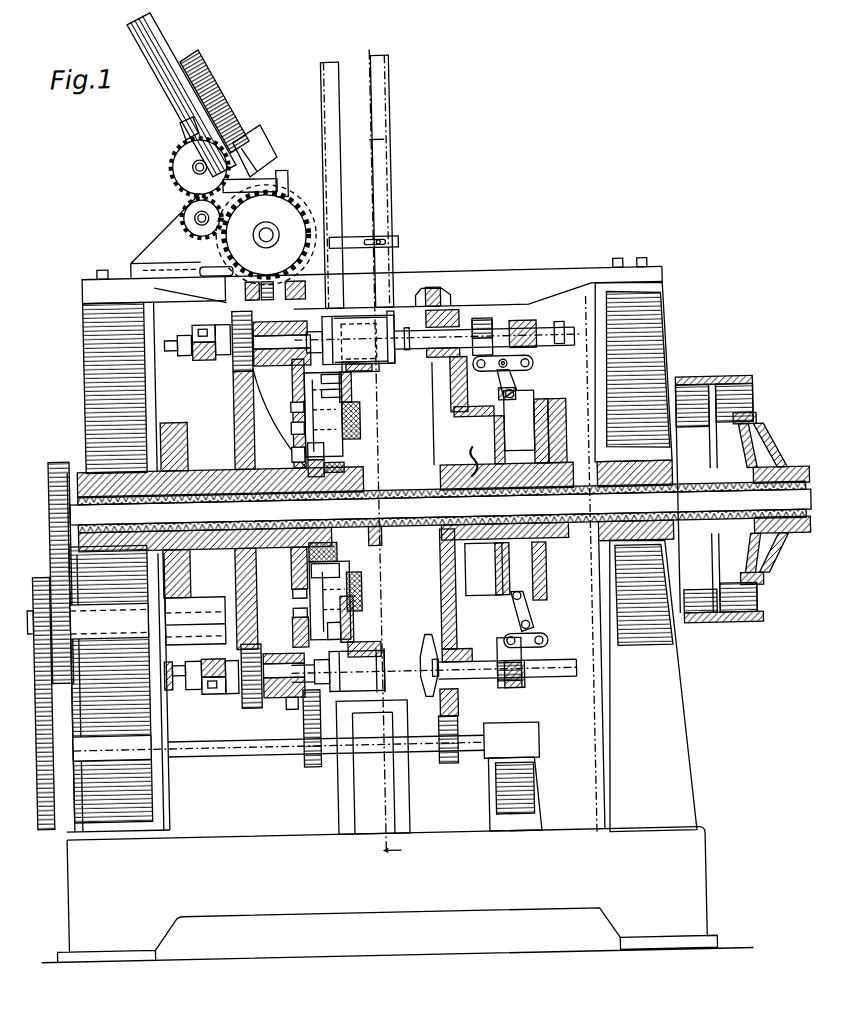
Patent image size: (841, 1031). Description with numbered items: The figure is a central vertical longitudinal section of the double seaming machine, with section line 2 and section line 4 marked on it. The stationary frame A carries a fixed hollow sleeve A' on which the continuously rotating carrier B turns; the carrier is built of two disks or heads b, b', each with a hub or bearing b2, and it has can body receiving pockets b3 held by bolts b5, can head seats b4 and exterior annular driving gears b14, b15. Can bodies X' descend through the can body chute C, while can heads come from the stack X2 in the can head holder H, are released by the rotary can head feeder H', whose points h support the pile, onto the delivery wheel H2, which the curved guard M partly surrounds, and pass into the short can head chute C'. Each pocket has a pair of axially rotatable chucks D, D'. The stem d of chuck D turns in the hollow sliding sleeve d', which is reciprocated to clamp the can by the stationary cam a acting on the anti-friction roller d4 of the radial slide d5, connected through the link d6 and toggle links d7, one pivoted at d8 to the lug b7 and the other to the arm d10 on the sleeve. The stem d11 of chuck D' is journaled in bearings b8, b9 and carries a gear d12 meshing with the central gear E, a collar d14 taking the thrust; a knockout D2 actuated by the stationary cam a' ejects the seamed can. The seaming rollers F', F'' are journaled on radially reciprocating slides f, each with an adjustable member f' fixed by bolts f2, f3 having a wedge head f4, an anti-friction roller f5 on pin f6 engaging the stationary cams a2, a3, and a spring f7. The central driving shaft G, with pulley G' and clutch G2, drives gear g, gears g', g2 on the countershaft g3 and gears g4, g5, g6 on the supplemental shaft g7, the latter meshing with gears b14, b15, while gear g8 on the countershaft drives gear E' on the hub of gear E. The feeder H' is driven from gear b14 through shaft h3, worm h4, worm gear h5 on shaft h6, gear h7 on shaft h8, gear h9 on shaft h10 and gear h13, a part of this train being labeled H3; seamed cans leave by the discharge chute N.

The stationary frame A is at (629, 560).
The stationary hollow sleeve A' is at (579, 564).
The central stationary cam a is at (556, 430).
The stationary cam a' is at (174, 692).
The central stationary cam a2 is at (296, 468).
The central stationary cam a3 is at (359, 470).
The rotating carrier B is at (349, 436).
The carrier disk b is at (269, 419).
The carrier disk b' is at (468, 509).
The hub b2 is at (289, 707).
The can body receiving pocket b3 is at (358, 370).
The can head seat b4 is at (362, 503).
The bolt b5 is at (367, 646).
The lug b7 is at (536, 328).
The bearing b8 is at (210, 357).
The radially yielding outer bearing b9 is at (258, 713).
The exterior annular driving gear b14 is at (322, 306).
The exterior annular driving gear b15 is at (445, 291).
The can body chute C is at (357, 175).
The can head chute C' is at (364, 255).
The can holder chuck D is at (440, 469).
The can holder chuck D' is at (338, 684).
The knockout D2 is at (179, 346).
The stem d is at (433, 516).
The hollow sliding sleeve d' is at (485, 519).
The anti-friction roller d4 is at (553, 423).
The radial slide d5 is at (538, 413).
The link d6 is at (525, 398).
The toggle links d7 is at (540, 371).
The pivot d8 is at (546, 649).
The arm d10 is at (485, 372).
The stem d11 is at (285, 499).
The gear d12 is at (230, 333).
The collar d14 is at (233, 357).
The central gear E is at (193, 504).
The gear E' is at (180, 408).
The seaming roller F' is at (344, 391).
The fork F'' is at (346, 590).
The seaming roller slide f is at (312, 522).
The adjustable member f' is at (285, 416).
The bolt f2 is at (295, 428).
The bolt f3 is at (295, 452).
The wedge shaped head f4 is at (365, 410).
The anti-friction roller f5 is at (345, 459).
The pin f6 is at (365, 436).
The spring f7 is at (364, 426).
The central driving shaft G is at (441, 507).
The driving pulley G' is at (718, 479).
The clutch G2 is at (769, 453).
The gear g is at (58, 557).
The gear g' is at (40, 688).
The gear g2 is at (69, 672).
The countershaft g3 is at (111, 684).
The gear g4 is at (46, 823).
The gear g5 is at (306, 766).
The gear g6 is at (445, 765).
The supplemental shaft g7 is at (231, 753).
The gear g8 is at (190, 596).
The can head holder H is at (178, 95).
The rotary can head feeder H' is at (262, 160).
The delivery wheel H2 is at (302, 196).
The arm part H3 is at (296, 165).
The points h is at (287, 232).
The shaft h3 is at (227, 284).
The worm h4 is at (278, 244).
The worm gear h5 is at (292, 184).
The shaft h6 is at (266, 238).
The gear h7 is at (190, 214).
The shaft h8 is at (208, 222).
The gear h9 is at (181, 163).
The shaft h10 is at (205, 160).
The gear h13 is at (250, 136).
The curved guard M is at (280, 144).
The discharge chute N is at (383, 785).
The can body X' is at (374, 392).
The pile of can heads X2 is at (212, 46).
The section line 2— 2 is at (424, 465).
The section line 4— 4 is at (594, 322).